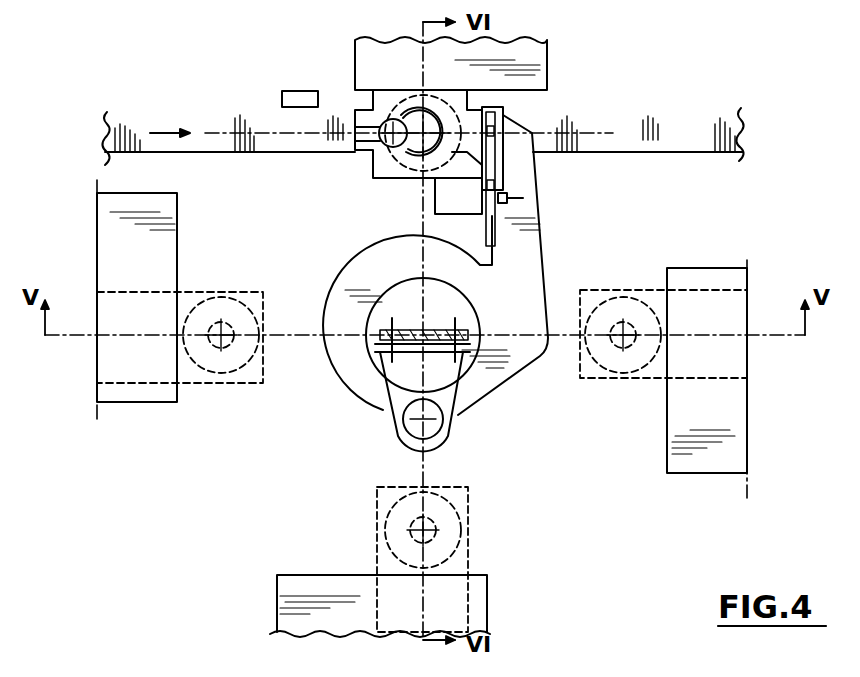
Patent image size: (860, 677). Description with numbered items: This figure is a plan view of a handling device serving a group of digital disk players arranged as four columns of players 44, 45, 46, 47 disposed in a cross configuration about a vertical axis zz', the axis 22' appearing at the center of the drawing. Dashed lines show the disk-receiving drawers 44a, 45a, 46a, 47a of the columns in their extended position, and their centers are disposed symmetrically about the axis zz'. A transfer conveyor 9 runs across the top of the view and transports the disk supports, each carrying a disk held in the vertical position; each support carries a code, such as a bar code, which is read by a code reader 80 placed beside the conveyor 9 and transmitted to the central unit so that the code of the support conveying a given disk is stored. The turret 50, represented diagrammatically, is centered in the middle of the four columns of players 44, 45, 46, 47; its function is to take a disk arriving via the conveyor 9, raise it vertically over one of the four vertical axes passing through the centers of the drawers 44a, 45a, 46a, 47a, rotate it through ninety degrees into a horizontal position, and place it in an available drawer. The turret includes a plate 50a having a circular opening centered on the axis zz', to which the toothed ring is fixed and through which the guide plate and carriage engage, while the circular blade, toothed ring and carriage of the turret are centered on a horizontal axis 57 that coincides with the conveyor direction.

The transfer conveyor 9 is at (142, 128).
The horizontal axis 57 is at (286, 137).
The code reader 80 is at (290, 90).
The column of players 44 is at (567, 72).
The disk-receiving drawer 44a is at (378, 180).
The turret 50 is at (550, 256).
The plate 50a is at (533, 311).
The vertical axis 22' is at (391, 384).
The column of players 47 is at (150, 403).
The disk-receiving drawer 47a is at (242, 305).
The column of players 46 is at (690, 474).
The disk-receiving drawer 46a is at (597, 380).
The column of players 45 is at (488, 592).
The disk-receiving drawer 45a is at (469, 499).